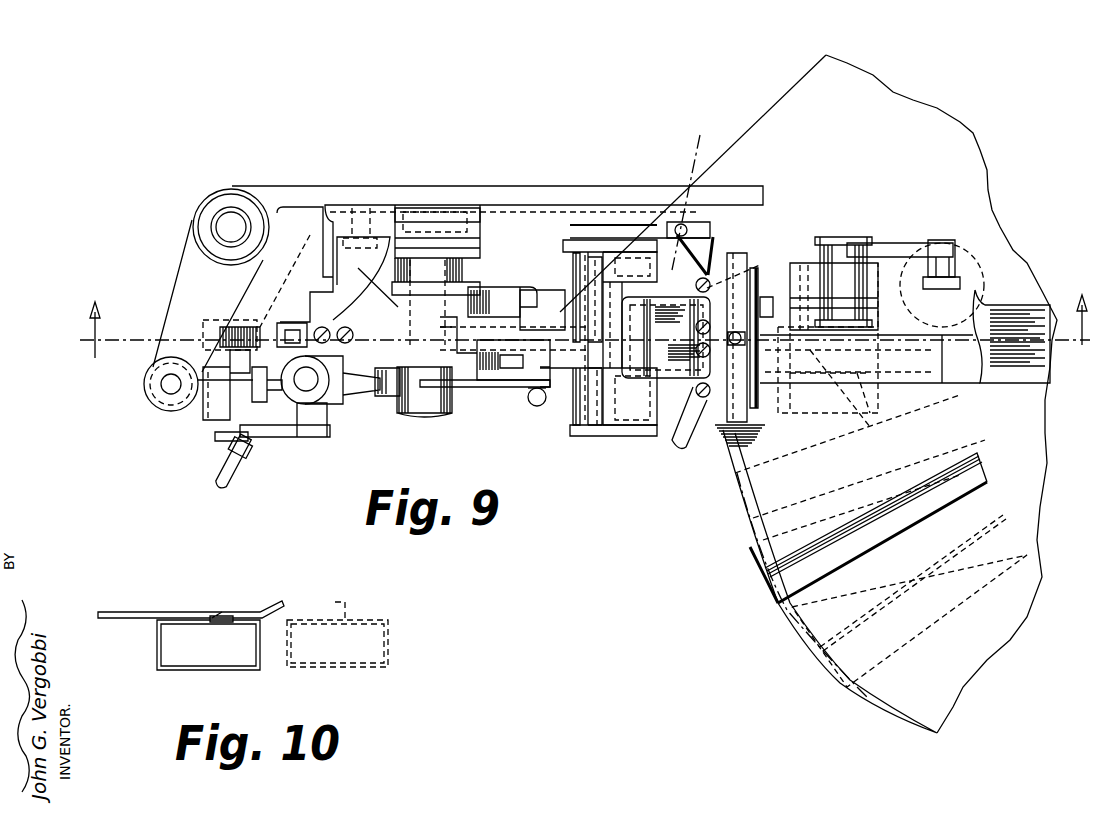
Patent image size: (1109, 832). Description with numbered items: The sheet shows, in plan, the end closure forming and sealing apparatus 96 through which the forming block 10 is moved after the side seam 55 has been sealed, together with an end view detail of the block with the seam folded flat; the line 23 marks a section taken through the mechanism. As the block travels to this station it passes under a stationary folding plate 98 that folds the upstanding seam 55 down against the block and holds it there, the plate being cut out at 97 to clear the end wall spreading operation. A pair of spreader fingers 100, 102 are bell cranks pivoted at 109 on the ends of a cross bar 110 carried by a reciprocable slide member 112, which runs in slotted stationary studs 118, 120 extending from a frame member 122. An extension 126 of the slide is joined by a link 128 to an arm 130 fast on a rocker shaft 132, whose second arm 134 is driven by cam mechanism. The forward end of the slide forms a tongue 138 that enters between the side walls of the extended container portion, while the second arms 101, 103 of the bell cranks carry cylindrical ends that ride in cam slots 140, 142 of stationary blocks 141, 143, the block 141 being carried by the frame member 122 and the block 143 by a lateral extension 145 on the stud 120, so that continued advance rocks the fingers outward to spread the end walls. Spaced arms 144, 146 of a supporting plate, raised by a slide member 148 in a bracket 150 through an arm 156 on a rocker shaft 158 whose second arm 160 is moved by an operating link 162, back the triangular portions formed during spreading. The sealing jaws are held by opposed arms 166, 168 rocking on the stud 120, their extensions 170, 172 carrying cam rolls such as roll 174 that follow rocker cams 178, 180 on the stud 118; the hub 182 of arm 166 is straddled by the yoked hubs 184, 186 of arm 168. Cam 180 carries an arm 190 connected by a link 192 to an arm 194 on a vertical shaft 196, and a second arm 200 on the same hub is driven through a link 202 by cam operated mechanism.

In FIG. 9, the forming block 10 is at (965, 378).
In FIG. 10, the forming block 10 is at (165, 650).
In FIG. 9, the line 23— 23 is at (589, 340).
In FIG. 9, the heat sealed side seam 55 is at (842, 510).
In FIG. 10, the heat sealed side seam 55 is at (225, 615).
In FIG. 9, the end closure forming and sealing apparatus 96 is at (813, 167).
In FIG. 9, the cut-out of the folding plate 97 is at (752, 440).
In FIG. 9, the stationary folding plate 98 is at (930, 513).
In FIG. 10, the stationary folding plate 98 is at (172, 612).
In FIG. 9, the spreader finger 100 is at (747, 265).
In FIG. 9, the second arm of bell crank 101 is at (703, 232).
In FIG. 9, the spreader finger 102 is at (802, 585).
In FIG. 9, the second arm of bell crank 103 is at (710, 500).
In FIG. 9, the pivot 109 is at (705, 282).
In FIG. 9, the cross bar 110 is at (686, 412).
In FIG. 9, the reciprocable slide member 112 is at (640, 407).
In FIG. 9, the stationary supporting stud 118 is at (420, 413).
In FIG. 9, the stationary supporting stud 120 is at (563, 385).
In FIG. 9, the frame member 122 is at (497, 186).
In FIG. 9, the extension of slide member 126 is at (345, 395).
In FIG. 9, the link 128 is at (262, 330).
In FIG. 9, the arm 130 is at (245, 340).
In FIG. 9, the rocker shaft 132 is at (218, 438).
In FIG. 9, the second arm 134 is at (293, 425).
In FIG. 9, the tongue 138 is at (800, 285).
In FIG. 9, the cam slot 140 is at (680, 200).
In FIG. 9, the stationary block 141 is at (687, 229).
In FIG. 9, the cam slot 142 is at (660, 485).
In FIG. 9, the stationary block 143 is at (655, 415).
In FIG. 9, the arm of supporting plate 144 is at (760, 268).
In FIG. 9, the lateral extension 145 is at (580, 436).
In FIG. 9, the arm of supporting plate 146 is at (760, 407).
In FIG. 9, the slide member 148 is at (780, 272).
In FIG. 9, the bracket 150 is at (860, 401).
In FIG. 9, the arm 156 is at (866, 402).
In FIG. 9, the rocker shaft 158 is at (860, 243).
In FIG. 9, the second arm 160 is at (893, 243).
In FIG. 9, the operating link 162 is at (960, 278).
In FIG. 9, the holding arm 166 is at (673, 273).
In FIG. 9, the holding arm 168 is at (655, 205).
In FIG. 9, the extension of arm 170 is at (515, 383).
In FIG. 9, the extension of arm 172 is at (557, 303).
In FIG. 9, the cam roll 174 is at (497, 380).
In FIG. 9, the rocker cam 178 is at (468, 395).
In FIG. 9, the rocker cam 180 is at (470, 297).
In FIG. 9, the central hub portion 182 is at (573, 385).
In FIG. 9, the yoked hub portion 184 is at (575, 263).
In FIG. 9, the yoked hub portion 186 is at (573, 422).
In FIG. 9, the arm 190 is at (385, 292).
In FIG. 9, the link 192 is at (328, 400).
In FIG. 9, the arm 194 is at (167, 325).
In FIG. 9, the vertical shaft 196 is at (215, 222).
In FIG. 9, the second arm 200 is at (240, 322).
In FIG. 9, the link 202 is at (238, 487).